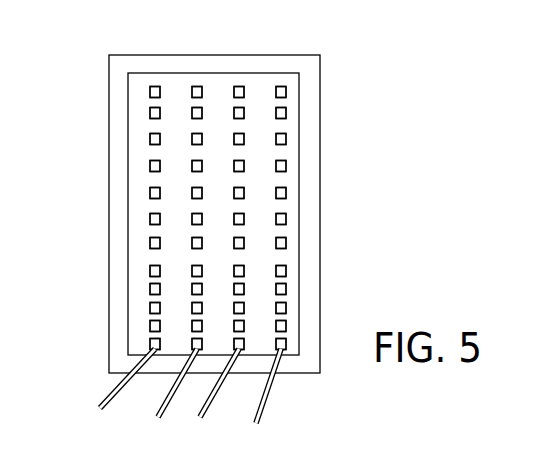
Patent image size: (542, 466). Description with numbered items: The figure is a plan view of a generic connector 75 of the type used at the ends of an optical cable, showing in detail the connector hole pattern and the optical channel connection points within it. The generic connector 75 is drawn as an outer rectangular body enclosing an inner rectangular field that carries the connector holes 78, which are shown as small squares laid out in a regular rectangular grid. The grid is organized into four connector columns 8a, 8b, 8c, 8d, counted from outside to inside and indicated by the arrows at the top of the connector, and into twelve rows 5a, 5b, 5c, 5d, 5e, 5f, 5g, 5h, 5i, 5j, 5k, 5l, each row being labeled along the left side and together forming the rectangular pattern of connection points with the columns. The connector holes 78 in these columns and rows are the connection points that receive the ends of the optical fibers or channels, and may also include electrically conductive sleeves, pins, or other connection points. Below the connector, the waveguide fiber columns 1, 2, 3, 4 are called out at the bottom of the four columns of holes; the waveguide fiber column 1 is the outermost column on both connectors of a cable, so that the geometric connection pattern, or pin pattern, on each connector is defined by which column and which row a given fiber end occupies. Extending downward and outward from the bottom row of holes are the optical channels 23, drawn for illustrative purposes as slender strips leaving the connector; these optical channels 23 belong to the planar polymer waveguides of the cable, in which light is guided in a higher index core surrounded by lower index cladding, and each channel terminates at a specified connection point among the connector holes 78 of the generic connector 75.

The generic connector 75 is at (336, 124).
The connector holes 78 is at (287, 193).
The waveguide fiber column 1 is at (156, 356).
The waveguide fiber column 2 is at (198, 356).
The waveguide fiber column 3 is at (240, 356).
The waveguide fiber column 4 is at (283, 356).
The optical channels 23 is at (186, 399).
The row 5a is at (150, 92).
The row 5b is at (150, 113).
The row 5c is at (150, 139).
The row 5d is at (150, 166).
The row 5e is at (150, 193).
The row 5f is at (150, 219).
The row 5g is at (150, 243).
The row 5h is at (150, 271).
The row 5i is at (150, 289).
The row 5j is at (150, 308).
The row 5k is at (150, 326).
The row 5l is at (150, 344).
The connector column 8a is at (155, 72).
The connector column 8b is at (197, 72).
The connector column 8c is at (239, 72).
The connector column 8d is at (281, 72).